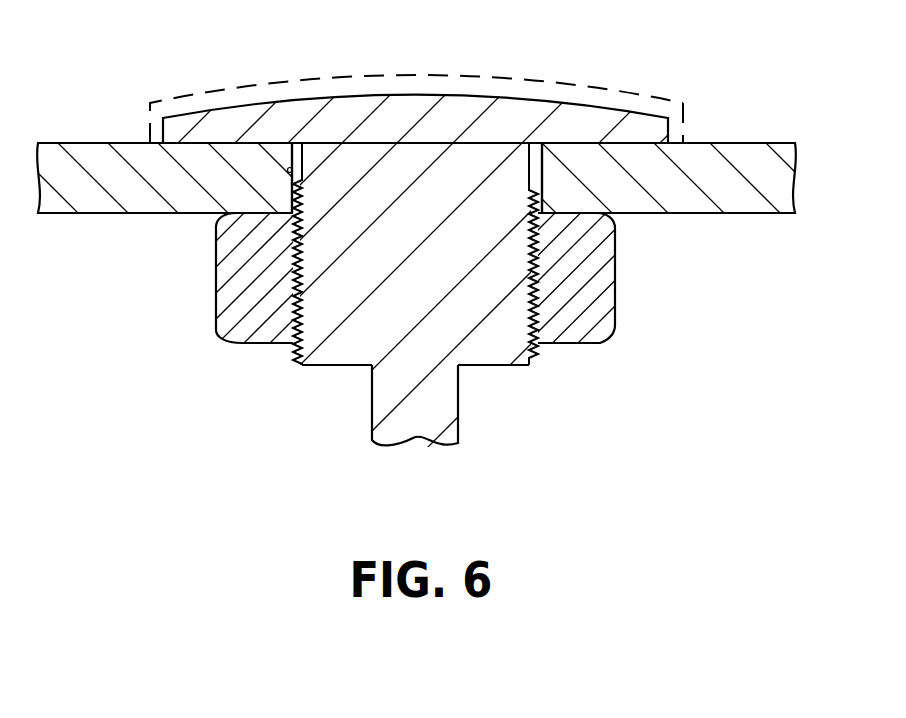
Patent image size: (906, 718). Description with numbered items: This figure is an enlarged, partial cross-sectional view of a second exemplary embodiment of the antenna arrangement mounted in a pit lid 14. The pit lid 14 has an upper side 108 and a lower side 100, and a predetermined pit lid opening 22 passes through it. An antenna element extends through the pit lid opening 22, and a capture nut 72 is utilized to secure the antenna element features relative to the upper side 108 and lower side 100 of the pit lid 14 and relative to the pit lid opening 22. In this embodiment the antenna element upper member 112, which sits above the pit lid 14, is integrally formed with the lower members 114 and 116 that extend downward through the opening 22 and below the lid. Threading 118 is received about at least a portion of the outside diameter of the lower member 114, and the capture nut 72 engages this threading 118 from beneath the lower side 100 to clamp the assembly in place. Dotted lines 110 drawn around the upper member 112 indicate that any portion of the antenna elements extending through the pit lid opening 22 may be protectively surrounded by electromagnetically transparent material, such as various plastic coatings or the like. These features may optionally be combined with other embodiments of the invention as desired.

The pit lid 14 is at (446, 214).
The pit lid opening 22 is at (287, 171).
The capture nut 72 is at (617, 257).
The lower side 100 is at (692, 214).
The upper side 108 is at (712, 143).
The dotted lines 110 is at (453, 74).
The antenna element upper member 112 is at (396, 156).
The lower member 114 is at (392, 270).
The lower member 116 is at (396, 411).
The threading 118 is at (297, 359).